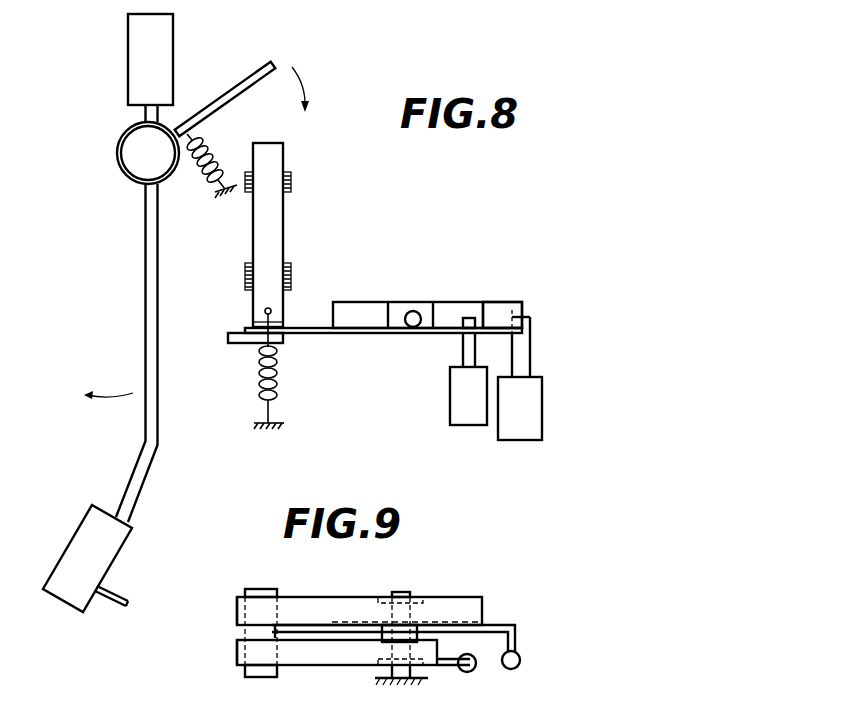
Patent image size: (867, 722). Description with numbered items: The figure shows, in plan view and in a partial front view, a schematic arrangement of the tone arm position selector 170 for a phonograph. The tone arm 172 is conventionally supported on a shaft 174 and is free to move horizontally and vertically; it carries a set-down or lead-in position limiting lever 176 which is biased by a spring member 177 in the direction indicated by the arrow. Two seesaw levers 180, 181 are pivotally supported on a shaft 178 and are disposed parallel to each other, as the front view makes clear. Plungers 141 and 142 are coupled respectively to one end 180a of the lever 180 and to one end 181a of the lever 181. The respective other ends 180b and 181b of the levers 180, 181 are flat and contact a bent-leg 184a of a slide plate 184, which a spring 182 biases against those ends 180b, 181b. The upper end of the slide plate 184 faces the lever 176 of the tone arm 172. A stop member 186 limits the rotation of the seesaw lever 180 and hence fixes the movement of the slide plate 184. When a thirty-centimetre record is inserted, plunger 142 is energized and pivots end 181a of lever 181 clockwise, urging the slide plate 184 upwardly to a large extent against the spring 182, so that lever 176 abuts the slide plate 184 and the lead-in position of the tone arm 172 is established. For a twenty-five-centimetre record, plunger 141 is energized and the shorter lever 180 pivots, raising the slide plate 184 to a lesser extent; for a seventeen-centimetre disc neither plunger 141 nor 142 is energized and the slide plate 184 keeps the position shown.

In FIG. 8, the tone arm position selector 170 is at (313, 270).
In FIG. 8, the tone arm 172 is at (147, 415).
In FIG. 8, the shaft 174 is at (140, 167).
In FIG. 8, the lead-in position limiting lever 176 is at (240, 89).
In FIG. 8, the spring member 177 is at (197, 140).
In FIG. 8, the shaft 178 is at (412, 328).
In FIG. 9, the shaft 178 is at (400, 592).
In FIG. 8, the seesaw lever 180 is at (399, 312).
In FIG. 9, the seesaw lever 180 is at (338, 667).
In FIG. 9, the end of lever 180 180a is at (440, 643).
In FIG. 9, the other end of lever 180 180b is at (238, 655).
In FIG. 8, the seesaw lever 181 is at (500, 310).
In FIG. 9, the seesaw lever 181 is at (466, 606).
In FIG. 9, the end of lever 181 181a is at (482, 606).
In FIG. 9, the other end of lever 181 181b is at (238, 610).
In FIG. 8, the spring 182 is at (281, 385).
In FIG. 8, the slide plate 184 is at (271, 222).
In FIG. 9, the slide plate 184 is at (262, 678).
In FIG. 8, the bent-leg of slide plate 184a is at (263, 318).
In FIG. 9, the bent-leg of slide plate 184a is at (250, 631).
In FIG. 8, the stop member 186 is at (238, 345).
In FIG. 8, the plunger 141 is at (457, 410).
In FIG. 8, the plunger 142 is at (517, 432).